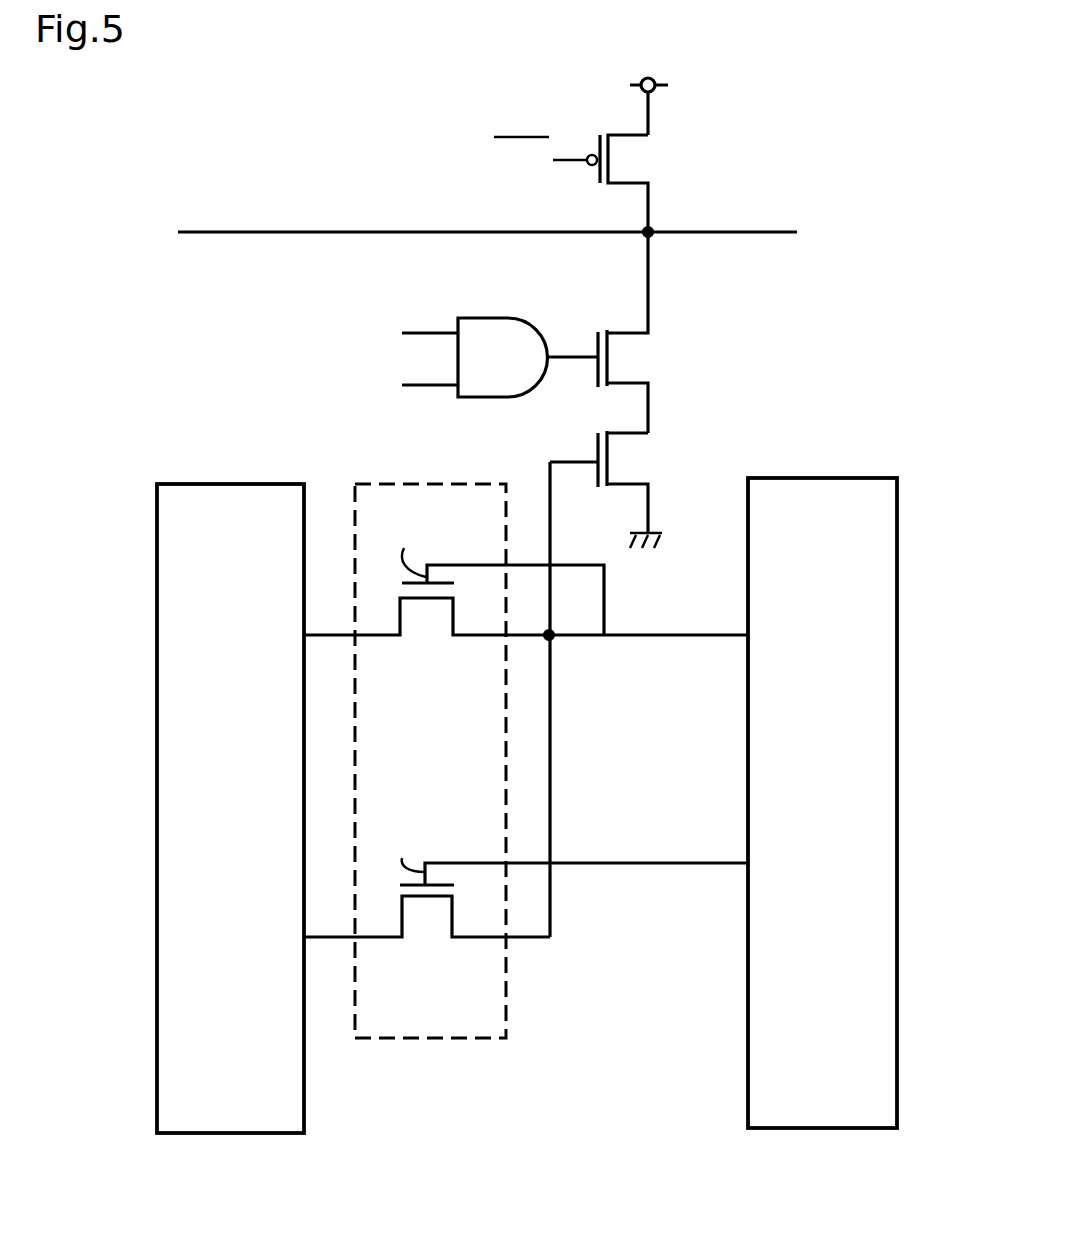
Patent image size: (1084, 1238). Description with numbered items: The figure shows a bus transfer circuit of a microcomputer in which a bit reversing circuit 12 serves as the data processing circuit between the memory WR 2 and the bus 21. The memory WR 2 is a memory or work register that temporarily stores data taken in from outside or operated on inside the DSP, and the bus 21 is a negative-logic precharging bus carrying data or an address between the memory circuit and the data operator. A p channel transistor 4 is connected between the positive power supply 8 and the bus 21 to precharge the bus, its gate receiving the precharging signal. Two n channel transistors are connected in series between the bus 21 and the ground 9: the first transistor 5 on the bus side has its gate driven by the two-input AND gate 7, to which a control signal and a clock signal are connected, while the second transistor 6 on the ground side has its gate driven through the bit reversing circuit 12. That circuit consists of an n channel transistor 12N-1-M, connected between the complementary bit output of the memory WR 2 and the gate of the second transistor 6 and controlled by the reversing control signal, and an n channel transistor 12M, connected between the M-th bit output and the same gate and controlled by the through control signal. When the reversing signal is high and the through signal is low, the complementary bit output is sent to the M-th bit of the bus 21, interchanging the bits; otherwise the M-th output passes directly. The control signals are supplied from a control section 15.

The memory WR 2 is at (210, 1137).
The p channel transistor 4 is at (635, 173).
The first transistor 5 is at (640, 360).
The second transistor 6 is at (625, 462).
The two-input AND gate 7 is at (503, 317).
The positive power supply 8 is at (668, 83).
The ground 9 is at (645, 552).
The bit reversing circuit 12 is at (457, 1040).
The n channel transistor 12M is at (526, 587).
The n channel transistor 12N-1-M is at (460, 917).
The control section 15 is at (808, 1130).
The bus 21 is at (704, 232).